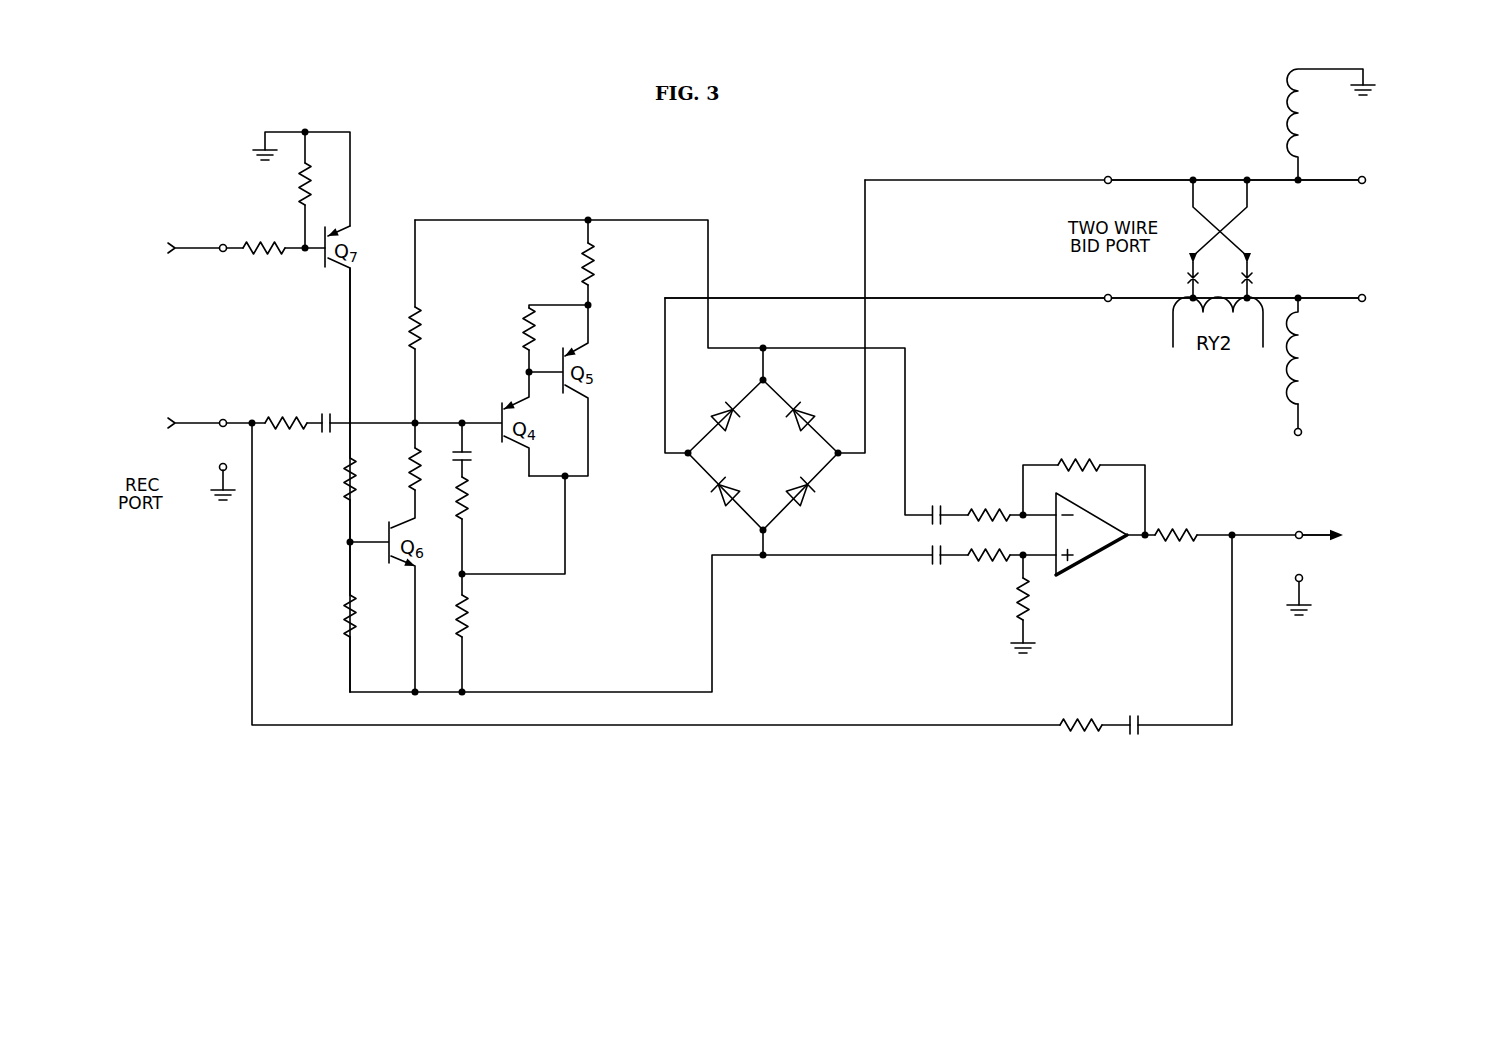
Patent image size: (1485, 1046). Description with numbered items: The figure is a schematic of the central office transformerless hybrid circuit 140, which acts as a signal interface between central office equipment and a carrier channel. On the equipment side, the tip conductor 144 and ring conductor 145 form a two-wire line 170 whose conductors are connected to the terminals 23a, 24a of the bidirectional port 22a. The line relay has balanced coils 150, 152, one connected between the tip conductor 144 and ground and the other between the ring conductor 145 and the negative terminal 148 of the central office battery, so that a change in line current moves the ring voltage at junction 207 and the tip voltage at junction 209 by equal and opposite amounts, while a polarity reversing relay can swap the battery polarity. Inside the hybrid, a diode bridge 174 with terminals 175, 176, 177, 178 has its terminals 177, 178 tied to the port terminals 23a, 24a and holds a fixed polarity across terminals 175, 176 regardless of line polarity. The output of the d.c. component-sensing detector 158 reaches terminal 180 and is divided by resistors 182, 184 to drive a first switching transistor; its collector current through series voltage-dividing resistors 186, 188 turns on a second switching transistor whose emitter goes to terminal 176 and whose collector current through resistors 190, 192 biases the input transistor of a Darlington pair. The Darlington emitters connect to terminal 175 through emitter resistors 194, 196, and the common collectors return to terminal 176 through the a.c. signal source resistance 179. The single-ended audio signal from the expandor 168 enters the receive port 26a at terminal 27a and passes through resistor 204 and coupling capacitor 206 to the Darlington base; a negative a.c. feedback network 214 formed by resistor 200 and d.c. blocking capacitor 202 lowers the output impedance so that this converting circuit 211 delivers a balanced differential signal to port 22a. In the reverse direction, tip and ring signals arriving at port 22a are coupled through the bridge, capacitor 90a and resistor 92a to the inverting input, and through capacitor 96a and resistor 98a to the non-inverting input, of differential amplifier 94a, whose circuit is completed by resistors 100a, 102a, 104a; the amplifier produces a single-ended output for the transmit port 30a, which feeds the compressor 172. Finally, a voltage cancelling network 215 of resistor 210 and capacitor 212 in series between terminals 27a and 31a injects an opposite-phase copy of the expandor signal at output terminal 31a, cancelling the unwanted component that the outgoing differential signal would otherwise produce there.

The central office hybrid circuit 140 is at (884, 745).
The tip conductor 144 is at (1323, 176).
The ring conductor 145 is at (1334, 300).
The negative terminal 148 is at (1302, 431).
The relay coil 150 is at (1282, 120).
The relay coil 152 is at (1286, 391).
The d.c. component-sensing detector 158 is at (163, 257).
The expandor 168 is at (163, 422).
The two-wire line 170 is at (987, 304).
The compressor 172 is at (1383, 536).
The diode bridge 174 is at (716, 514).
The diode bridge terminal 175 is at (777, 382).
The diode bridge terminal 176 is at (772, 532).
The diode bridge terminal 177 is at (683, 459).
The diode bridge terminal 178 is at (844, 459).
The a.c. signal source resistance 179 is at (476, 625).
The terminal 180 is at (232, 240).
The resistor 182 is at (268, 258).
The resistor 184 is at (290, 193).
The voltage-dividing resistor 186 is at (340, 494).
The voltage-dividing resistor 188 is at (340, 611).
The voltage dividing resistor 190 is at (410, 462).
The voltage dividing resistor 192 is at (411, 323).
The emitter resistor 194 is at (524, 336).
The emitter resistor 196 is at (600, 265).
The resistor 200 is at (476, 500).
The d.c. blocking capacitor 202 is at (472, 457).
The resistor 204 is at (288, 432).
The coupling capacitor 206 is at (332, 414).
The junction 207 is at (1300, 296).
The junction 209 is at (1299, 185).
The resistor 210 is at (1063, 718).
The converting circuit 211 is at (567, 592).
The capacitor 212 is at (1139, 718).
The negative a.c. feedback network 214 is at (474, 516).
The voltage cancelling network 215 is at (1078, 746).
The bidirectional port 22a is at (1123, 273).
The bidirectional port terminal 23a is at (1105, 176).
The bidirectional port terminal 24a is at (1105, 303).
The receive port 26a is at (241, 456).
The receive port terminal 27a is at (226, 418).
The transmit port 30a is at (1321, 568).
The output terminal 31a is at (1296, 531).
The capacitor 90a is at (940, 502).
The resistor 92a is at (994, 502).
The differential amplifier 94a is at (1090, 564).
The capacitor 96a is at (926, 566).
The resistor 98a is at (986, 566).
The resistor 100a is at (1064, 450).
The resistor 102a is at (1176, 548).
The resistor 104a is at (1015, 600).